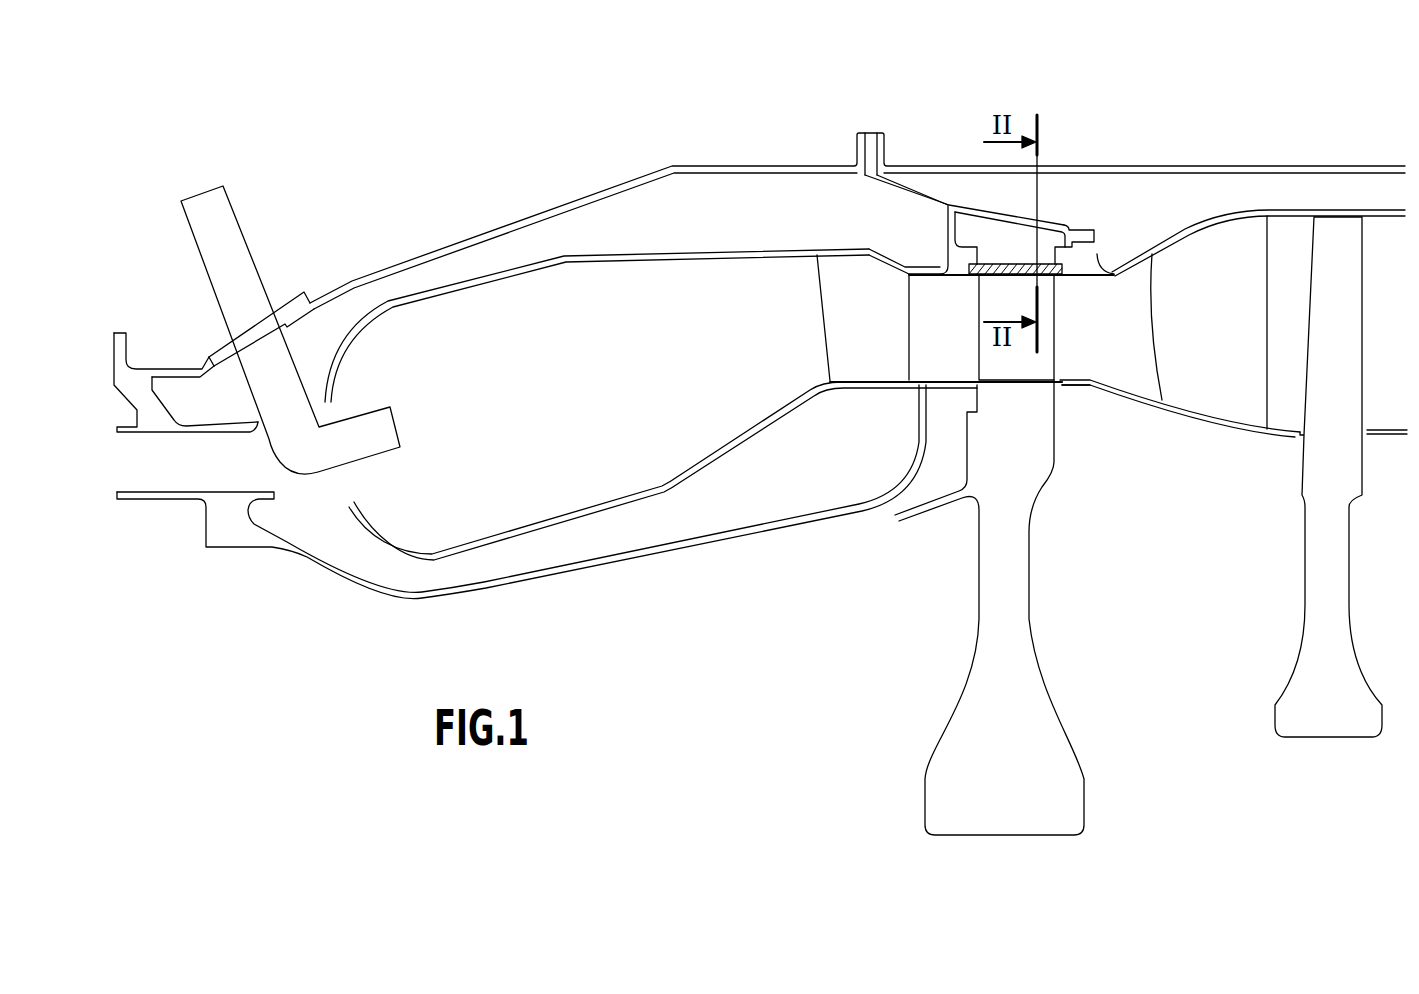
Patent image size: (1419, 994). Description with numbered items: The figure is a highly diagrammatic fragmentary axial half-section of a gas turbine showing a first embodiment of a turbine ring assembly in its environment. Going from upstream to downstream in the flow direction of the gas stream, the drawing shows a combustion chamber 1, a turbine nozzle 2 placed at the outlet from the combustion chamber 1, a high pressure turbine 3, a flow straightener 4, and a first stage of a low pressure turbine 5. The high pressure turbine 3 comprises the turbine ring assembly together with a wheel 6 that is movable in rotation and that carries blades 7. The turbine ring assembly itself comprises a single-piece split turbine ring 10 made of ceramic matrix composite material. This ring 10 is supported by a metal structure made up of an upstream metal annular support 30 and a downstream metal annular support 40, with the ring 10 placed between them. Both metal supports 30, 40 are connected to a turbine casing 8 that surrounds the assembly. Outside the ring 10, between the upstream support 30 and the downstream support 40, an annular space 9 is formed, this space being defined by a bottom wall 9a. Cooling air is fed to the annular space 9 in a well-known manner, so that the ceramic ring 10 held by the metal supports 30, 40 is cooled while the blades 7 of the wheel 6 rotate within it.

The combustion chamber 1 is at (709, 246).
The turbine nozzle 2 is at (861, 259).
The high pressure turbine 3 is at (1056, 282).
The flow straightener 4 is at (1202, 246).
The first stage of low pressure turbine 5 is at (1327, 229).
The wheel 6 is at (1044, 452).
The blades 7 is at (1039, 333).
The turbine casing 8 is at (1176, 157).
The annular space 9 is at (1004, 222).
The bottom wall 9a is at (1006, 219).
The single-piece split turbine ring 10 is at (996, 251).
The upstream metal annular support 30 is at (944, 251).
The downstream metal annular support 40 is at (1079, 252).